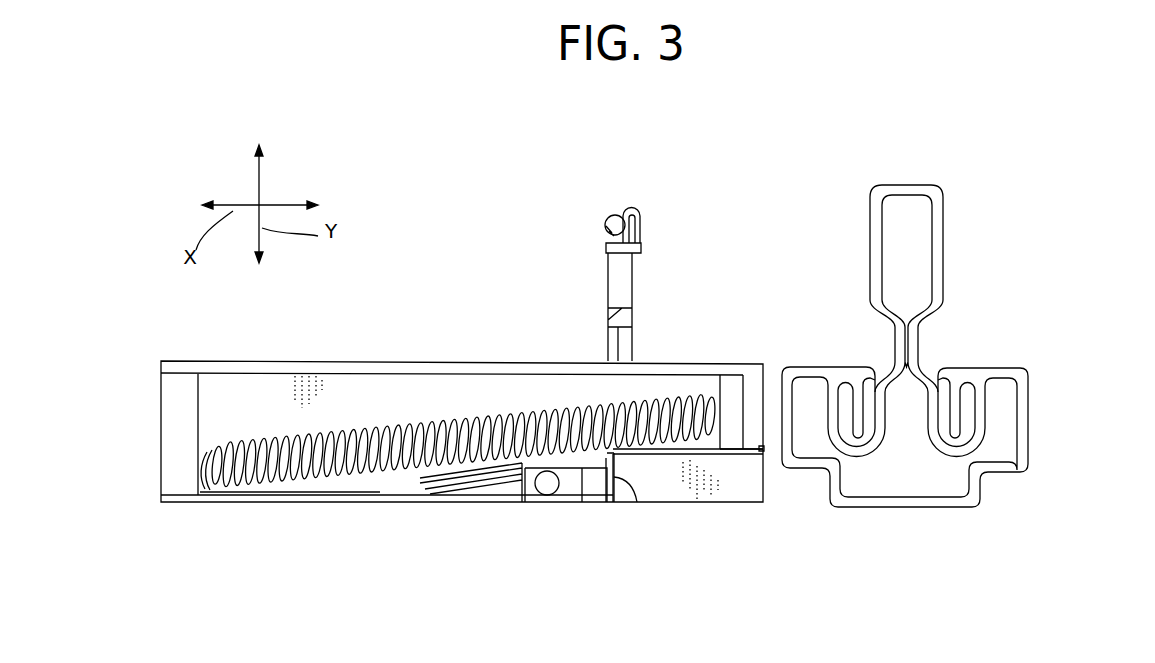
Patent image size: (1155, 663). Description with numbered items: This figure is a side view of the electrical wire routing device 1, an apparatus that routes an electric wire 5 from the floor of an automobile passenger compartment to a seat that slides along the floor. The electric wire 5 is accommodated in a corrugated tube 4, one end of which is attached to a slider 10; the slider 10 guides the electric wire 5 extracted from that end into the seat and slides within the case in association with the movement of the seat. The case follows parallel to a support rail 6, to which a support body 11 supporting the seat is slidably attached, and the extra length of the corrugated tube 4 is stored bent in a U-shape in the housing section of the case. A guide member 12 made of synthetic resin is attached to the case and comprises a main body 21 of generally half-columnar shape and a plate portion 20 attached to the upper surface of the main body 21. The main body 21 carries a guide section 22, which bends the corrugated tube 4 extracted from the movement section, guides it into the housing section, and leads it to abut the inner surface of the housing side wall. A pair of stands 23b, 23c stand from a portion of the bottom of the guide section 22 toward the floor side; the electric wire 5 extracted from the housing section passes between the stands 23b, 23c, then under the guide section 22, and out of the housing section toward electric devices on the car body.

The electrical wire routing device 1 is at (675, 187).
The corrugated tube 4 is at (451, 500).
The electric wire 5 is at (546, 496).
The support rail 6 is at (1032, 413).
The slider 10 is at (636, 337).
The support body 11 is at (947, 245).
The guide member 12 is at (767, 396).
The plate portion 20 is at (720, 365).
The main body 21 is at (766, 456).
The guide section 22 is at (376, 500).
The stand 23b is at (503, 500).
The stand 23c is at (616, 482).